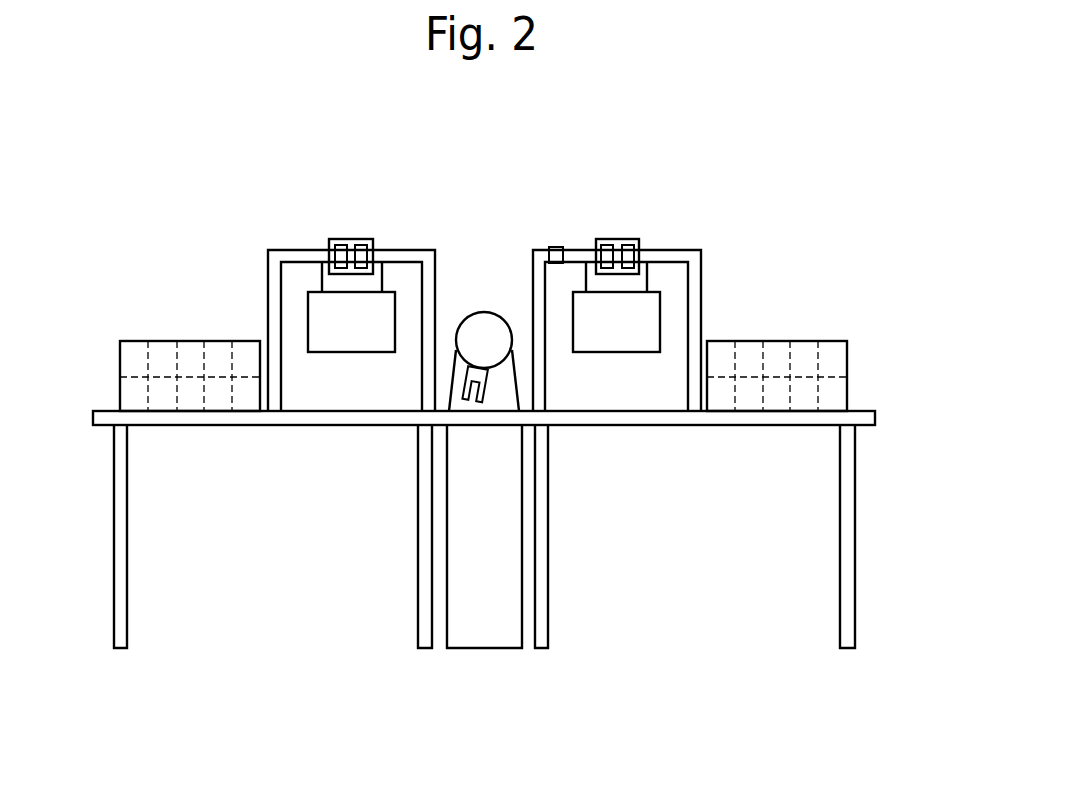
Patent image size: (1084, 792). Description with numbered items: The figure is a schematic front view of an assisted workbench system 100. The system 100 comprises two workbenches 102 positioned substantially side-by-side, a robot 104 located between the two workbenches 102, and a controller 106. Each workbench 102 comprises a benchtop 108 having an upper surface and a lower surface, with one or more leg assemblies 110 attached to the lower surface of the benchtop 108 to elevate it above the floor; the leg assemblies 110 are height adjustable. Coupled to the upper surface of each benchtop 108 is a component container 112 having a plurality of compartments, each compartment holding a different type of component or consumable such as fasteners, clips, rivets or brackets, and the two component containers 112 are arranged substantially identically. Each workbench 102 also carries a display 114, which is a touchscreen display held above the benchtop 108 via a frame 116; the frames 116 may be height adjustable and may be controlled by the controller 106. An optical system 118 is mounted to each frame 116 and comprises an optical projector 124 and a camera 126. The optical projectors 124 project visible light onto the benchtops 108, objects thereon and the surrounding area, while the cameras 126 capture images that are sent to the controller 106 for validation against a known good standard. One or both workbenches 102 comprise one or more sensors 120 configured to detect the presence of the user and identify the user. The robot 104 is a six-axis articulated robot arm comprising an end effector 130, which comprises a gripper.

The assisted workbench system 100 is at (748, 154).
The workbench 102 is at (100, 471).
The robot 104 is at (481, 327).
The controller 106 is at (483, 622).
The benchtop 108 is at (105, 408).
The leg assembly 110 is at (120, 635).
The component container 112 is at (162, 345).
The display 114 is at (310, 322).
The frame 116 is at (267, 313).
The optical system 118 is at (349, 239).
The sensor 120 is at (556, 252).
The optical projector 124 is at (340, 255).
The camera 126 is at (363, 255).
The end effector 130 is at (487, 378).